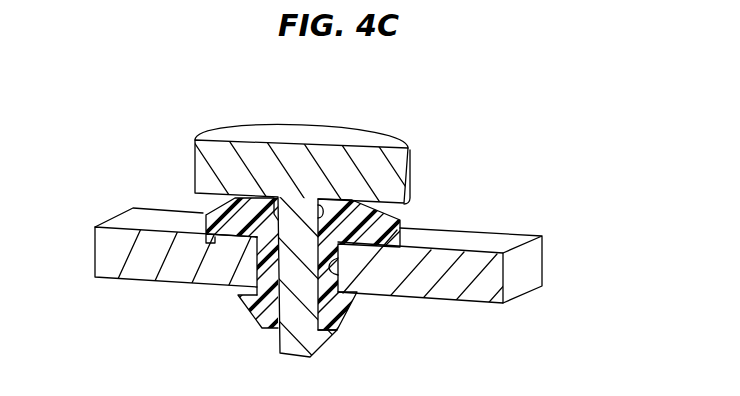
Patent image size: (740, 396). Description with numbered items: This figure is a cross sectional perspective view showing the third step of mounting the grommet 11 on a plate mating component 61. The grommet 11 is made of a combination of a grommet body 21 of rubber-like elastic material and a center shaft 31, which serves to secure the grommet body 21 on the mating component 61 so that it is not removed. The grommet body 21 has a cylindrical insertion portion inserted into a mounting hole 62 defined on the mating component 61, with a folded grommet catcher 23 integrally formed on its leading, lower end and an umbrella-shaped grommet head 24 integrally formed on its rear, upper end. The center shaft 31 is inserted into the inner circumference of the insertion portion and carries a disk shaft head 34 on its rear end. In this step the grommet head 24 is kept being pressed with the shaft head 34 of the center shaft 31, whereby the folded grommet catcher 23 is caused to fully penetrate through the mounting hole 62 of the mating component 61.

The grommet 11 is at (193, 201).
The grommet body 21 is at (373, 228).
The grommet catcher 23 is at (262, 308).
The grommet head 24 is at (240, 168).
The center shaft 31 is at (382, 182).
The shaft head 34 is at (212, 224).
The mating component 61 is at (485, 278).
The mounting hole 62 is at (340, 266).